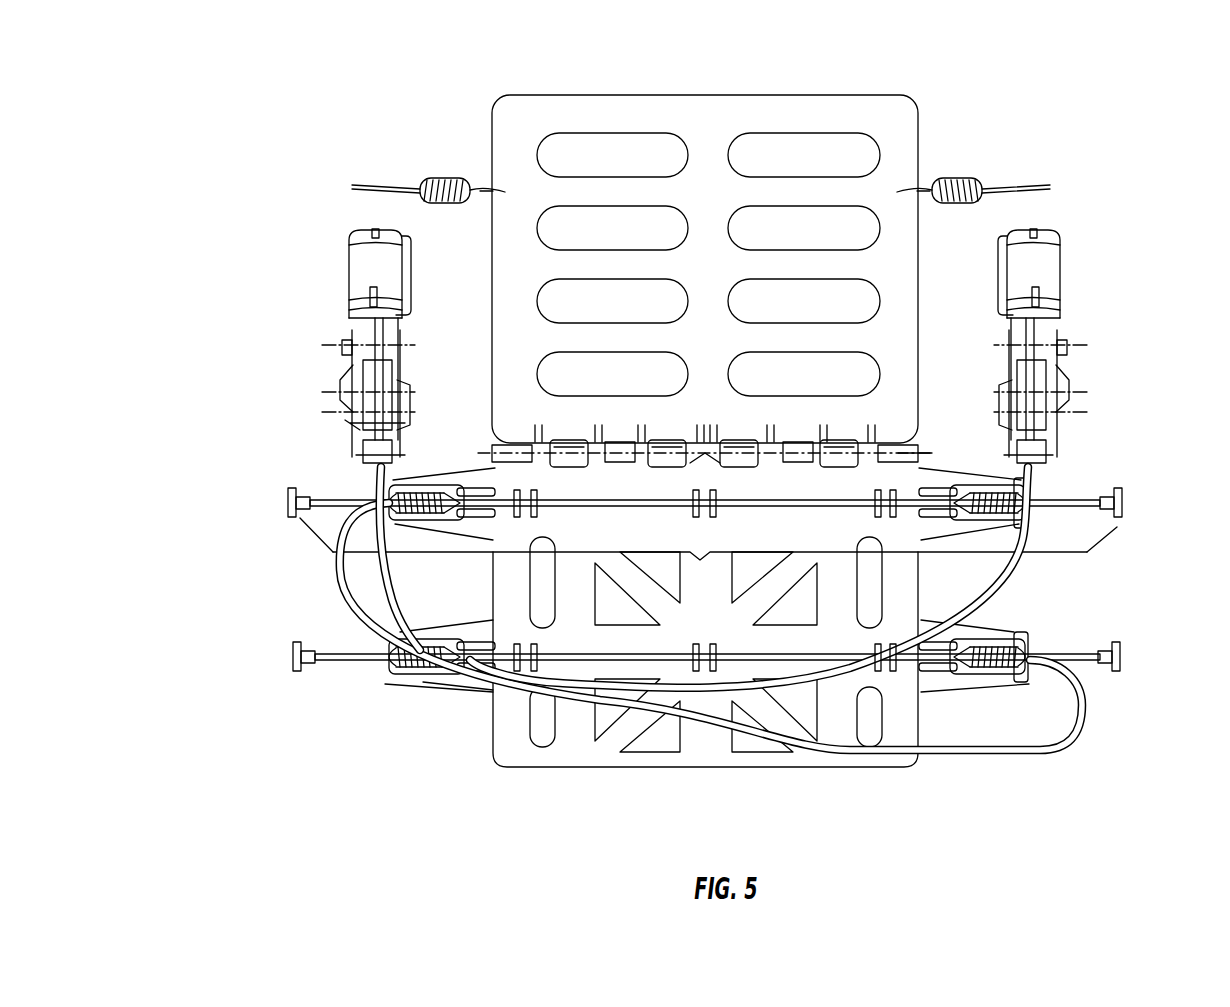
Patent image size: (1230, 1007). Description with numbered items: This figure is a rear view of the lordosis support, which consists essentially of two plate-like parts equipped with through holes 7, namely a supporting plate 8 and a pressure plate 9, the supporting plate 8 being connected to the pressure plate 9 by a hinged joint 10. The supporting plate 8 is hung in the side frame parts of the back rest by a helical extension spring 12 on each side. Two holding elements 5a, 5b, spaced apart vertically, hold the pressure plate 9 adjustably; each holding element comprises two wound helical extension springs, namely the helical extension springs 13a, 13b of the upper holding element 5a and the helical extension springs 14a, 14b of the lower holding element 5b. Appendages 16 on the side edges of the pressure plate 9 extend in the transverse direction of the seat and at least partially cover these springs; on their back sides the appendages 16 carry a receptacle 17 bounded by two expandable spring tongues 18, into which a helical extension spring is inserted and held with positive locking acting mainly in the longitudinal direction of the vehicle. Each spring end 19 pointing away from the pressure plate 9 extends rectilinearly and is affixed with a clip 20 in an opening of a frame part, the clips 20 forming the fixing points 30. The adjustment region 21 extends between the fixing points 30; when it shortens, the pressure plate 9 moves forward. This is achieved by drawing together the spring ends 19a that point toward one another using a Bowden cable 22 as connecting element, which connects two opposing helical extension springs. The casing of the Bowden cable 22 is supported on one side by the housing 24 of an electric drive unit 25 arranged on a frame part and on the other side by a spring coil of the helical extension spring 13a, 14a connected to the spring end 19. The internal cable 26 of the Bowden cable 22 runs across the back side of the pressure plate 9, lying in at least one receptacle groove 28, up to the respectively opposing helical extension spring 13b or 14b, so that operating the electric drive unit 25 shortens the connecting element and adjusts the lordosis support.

The holding element 5a is at (771, 498).
The holding element 5b is at (768, 660).
The through holes 7 is at (583, 145).
The supporting plate 8 is at (518, 115).
The pressure plate 9 is at (628, 752).
The hinged joint 10 is at (878, 462).
The helical extension spring 12 is at (442, 182).
The helical extension spring 13a is at (420, 486).
The helical extension spring 13b is at (1045, 480).
The helical extension spring 14a is at (985, 672).
The helical extension spring 14b is at (397, 672).
The appendages 16 is at (1050, 680).
The receptacle 17 is at (476, 522).
The spring tongues 18 is at (440, 492).
The spring end 19 is at (1082, 655).
The spring ends 19a is at (963, 500).
The clip 20 is at (1118, 500).
The adjustment region 21 is at (700, 561).
The Bowden cable 22 is at (1012, 562).
The housing 24 is at (352, 450).
The electric drive unit 25 is at (404, 318).
The internal cable 26 is at (575, 497).
The receptacle groove 28 is at (521, 662).
The fixing points 30 is at (705, 580).